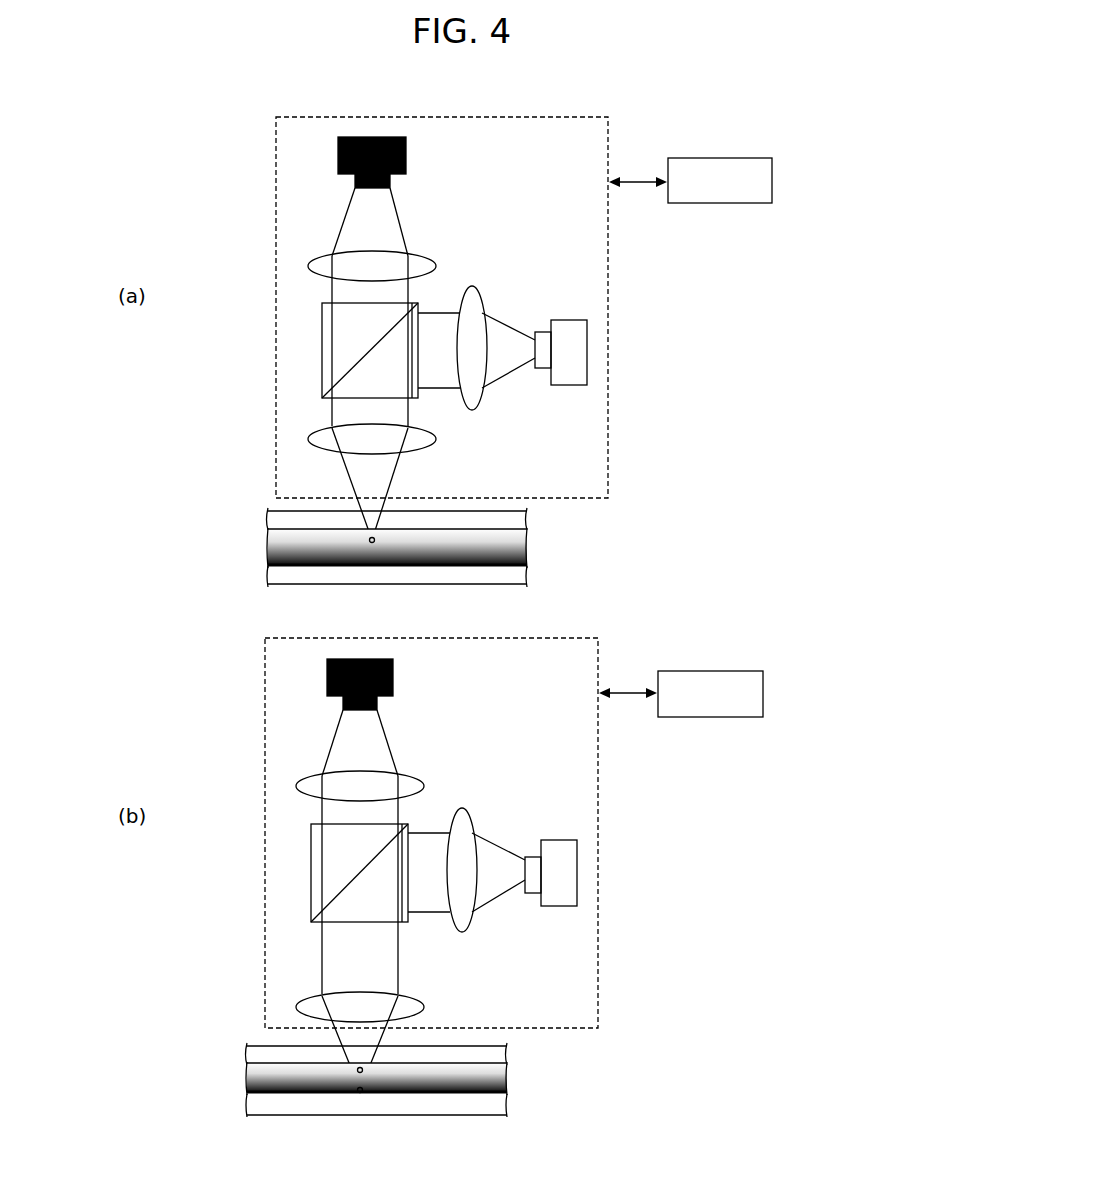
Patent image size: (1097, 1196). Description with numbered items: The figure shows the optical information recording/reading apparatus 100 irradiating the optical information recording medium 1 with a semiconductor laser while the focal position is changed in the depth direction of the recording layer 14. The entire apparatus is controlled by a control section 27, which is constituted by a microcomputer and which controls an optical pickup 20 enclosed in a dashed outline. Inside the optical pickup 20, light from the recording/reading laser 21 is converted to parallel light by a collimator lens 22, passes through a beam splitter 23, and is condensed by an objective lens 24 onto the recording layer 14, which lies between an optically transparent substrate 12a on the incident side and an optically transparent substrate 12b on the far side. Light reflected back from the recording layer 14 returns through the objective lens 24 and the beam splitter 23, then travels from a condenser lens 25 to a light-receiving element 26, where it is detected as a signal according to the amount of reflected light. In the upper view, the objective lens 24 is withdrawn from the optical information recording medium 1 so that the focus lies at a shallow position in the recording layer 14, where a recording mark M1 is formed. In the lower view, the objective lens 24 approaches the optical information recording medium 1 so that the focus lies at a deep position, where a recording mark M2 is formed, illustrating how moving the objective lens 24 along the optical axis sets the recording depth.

The optical information recording/reading apparatus 100 is at (256, 158).
The optical pickup 20 is at (464, 116).
The recording/reading laser 21 is at (362, 136).
The collimator lens 22 is at (308, 265).
The beam splitter 23 is at (322, 356).
The objective lens 24 is at (308, 441).
The condenser lens 25 is at (480, 302).
The light-receiving element 26 is at (588, 348).
The control section 27 is at (726, 158).
The optical information recording medium 1 is at (395, 813).
The optically transparent substrate 12a is at (280, 521).
The optically transparent substrate 12b is at (283, 573).
The recording layer 14 is at (278, 546).
The recording mark M1 is at (376, 538).
The recording mark M2 is at (361, 1092).